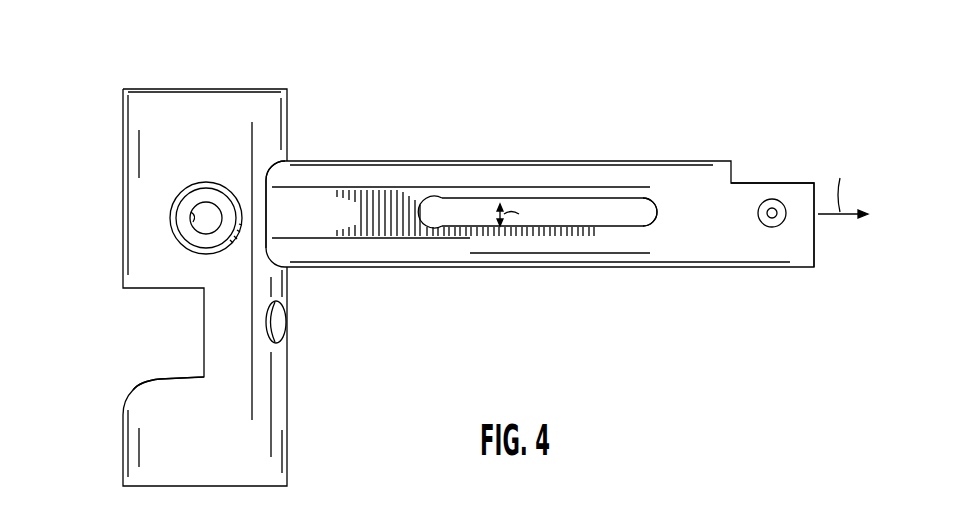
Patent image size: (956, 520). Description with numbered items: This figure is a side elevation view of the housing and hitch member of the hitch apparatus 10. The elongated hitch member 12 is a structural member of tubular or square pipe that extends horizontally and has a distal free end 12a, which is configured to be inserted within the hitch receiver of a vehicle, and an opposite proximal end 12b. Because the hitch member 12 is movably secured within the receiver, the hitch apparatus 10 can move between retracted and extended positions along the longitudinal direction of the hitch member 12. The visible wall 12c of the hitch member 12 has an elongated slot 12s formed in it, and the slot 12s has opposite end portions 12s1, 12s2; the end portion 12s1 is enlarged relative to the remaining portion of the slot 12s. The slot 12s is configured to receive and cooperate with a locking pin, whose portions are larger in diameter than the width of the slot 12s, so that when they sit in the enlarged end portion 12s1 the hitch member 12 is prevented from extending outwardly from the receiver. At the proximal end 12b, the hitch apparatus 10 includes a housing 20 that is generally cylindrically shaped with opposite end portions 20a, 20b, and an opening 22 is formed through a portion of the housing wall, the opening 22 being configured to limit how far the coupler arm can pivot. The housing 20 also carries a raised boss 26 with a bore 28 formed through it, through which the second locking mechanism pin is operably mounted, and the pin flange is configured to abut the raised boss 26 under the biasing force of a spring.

The hitch apparatus 10 is at (531, 102).
The hitch member 12 is at (523, 158).
The distal free end 12a is at (772, 183).
The proximal end 12b is at (292, 161).
The wall 12c is at (310, 224).
The slot 12s is at (556, 218).
The enlarged end portion 12s1 is at (427, 213).
The end portion 12s2 is at (656, 213).
The housing 20 is at (173, 88).
The end portion 20a is at (123, 465).
The end portion 20b is at (143, 147).
The opening 22 is at (142, 381).
The raised boss 26 is at (207, 185).
The bore 28 is at (197, 220).